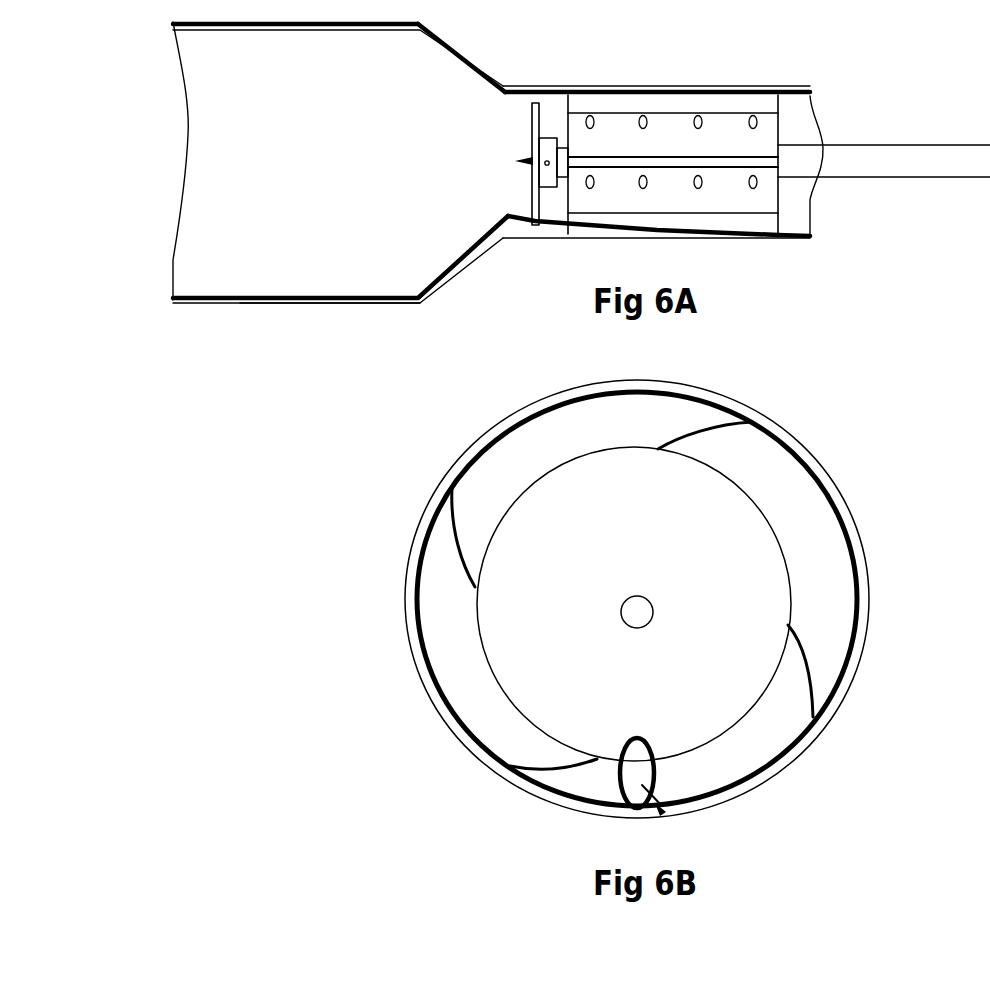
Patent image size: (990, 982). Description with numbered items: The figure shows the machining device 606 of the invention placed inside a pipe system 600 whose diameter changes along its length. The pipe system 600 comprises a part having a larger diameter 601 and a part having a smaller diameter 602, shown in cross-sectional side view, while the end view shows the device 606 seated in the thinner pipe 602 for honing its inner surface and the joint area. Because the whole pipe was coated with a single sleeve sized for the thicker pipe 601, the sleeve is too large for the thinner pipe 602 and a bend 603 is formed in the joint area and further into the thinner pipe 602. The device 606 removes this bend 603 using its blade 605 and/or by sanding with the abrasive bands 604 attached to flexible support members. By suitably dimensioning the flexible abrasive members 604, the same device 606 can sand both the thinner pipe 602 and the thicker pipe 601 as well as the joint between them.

In FIG. 6A, the pipe system 600 is at (187, 137).
In FIG. 6A, the larger diameter part 601 is at (352, 305).
In FIG. 6A, the smaller diameter part 602 is at (528, 82).
In FIG. 6B, the smaller diameter part 602 is at (410, 598).
In FIG. 6A, the bend 603 is at (527, 233).
In FIG. 6B, the bend 603 is at (647, 820).
In FIG. 6A, the abrasive bands 604 is at (720, 107).
In FIG. 6B, the abrasive bands 604 is at (740, 422).
In FIG. 6A, the blade 605 is at (532, 183).
In FIG. 6B, the blade 605 is at (634, 604).
In FIG. 6A, the machining device 606 is at (617, 120).